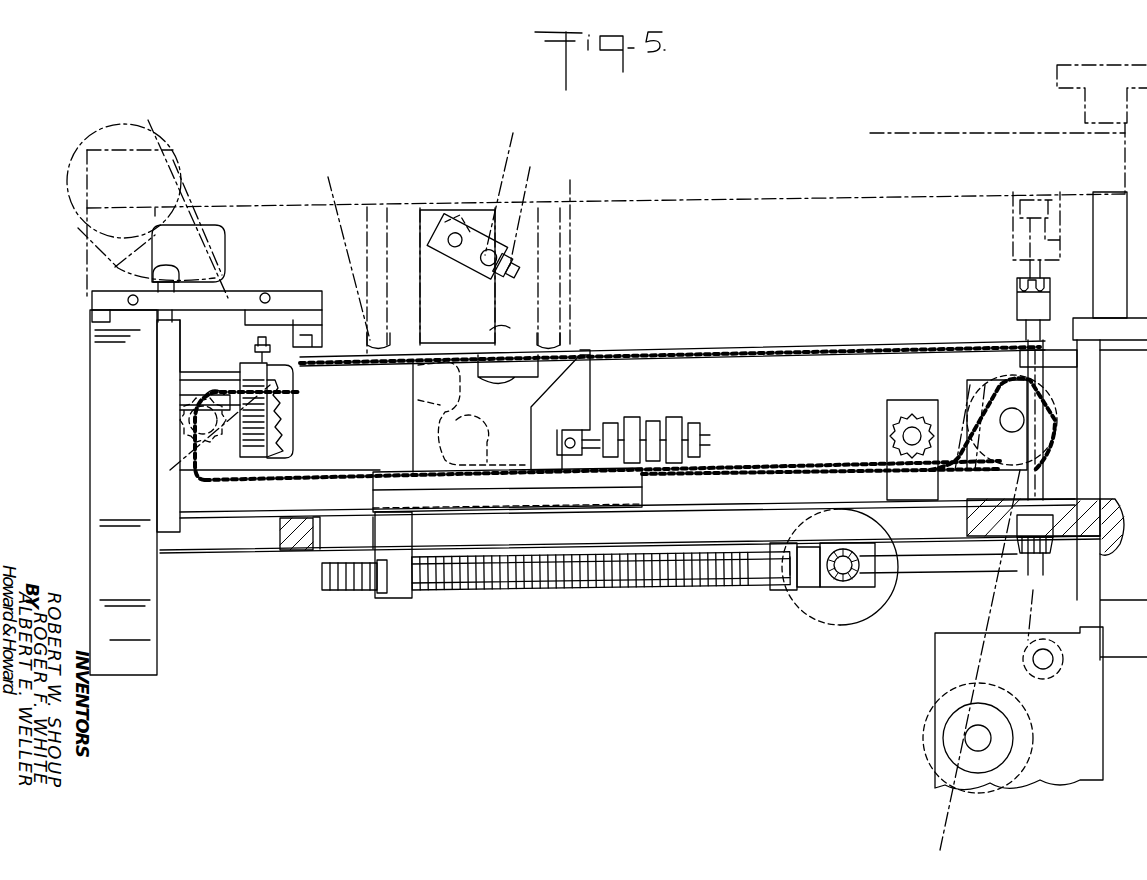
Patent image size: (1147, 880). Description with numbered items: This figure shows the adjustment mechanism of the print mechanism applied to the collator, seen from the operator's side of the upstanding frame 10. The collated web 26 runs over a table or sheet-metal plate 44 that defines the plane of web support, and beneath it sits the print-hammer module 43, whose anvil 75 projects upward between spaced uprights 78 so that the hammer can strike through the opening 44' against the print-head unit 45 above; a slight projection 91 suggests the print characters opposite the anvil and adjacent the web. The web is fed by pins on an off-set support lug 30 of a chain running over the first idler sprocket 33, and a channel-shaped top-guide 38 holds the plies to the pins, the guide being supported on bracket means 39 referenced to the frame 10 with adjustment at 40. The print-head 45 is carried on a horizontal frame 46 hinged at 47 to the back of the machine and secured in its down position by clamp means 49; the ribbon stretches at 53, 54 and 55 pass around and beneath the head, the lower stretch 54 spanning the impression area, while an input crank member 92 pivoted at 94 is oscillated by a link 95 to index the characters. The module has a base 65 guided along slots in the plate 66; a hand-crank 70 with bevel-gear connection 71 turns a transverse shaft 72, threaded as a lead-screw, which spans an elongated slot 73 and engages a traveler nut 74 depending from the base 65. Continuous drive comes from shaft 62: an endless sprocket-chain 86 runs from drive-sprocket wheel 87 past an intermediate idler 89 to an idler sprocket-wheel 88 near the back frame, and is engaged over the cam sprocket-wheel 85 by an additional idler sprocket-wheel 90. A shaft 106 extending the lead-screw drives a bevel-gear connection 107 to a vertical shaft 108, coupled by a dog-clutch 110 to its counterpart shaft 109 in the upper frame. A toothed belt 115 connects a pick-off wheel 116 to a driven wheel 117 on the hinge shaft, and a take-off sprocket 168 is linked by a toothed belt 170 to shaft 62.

The frame 10 is at (82, 400).
The collated web 26 is at (586, 352).
The off-set support lug 30 is at (287, 352).
The first idler sprocket 33 is at (226, 458).
The top-guide 38 is at (318, 334).
The bracket means 39 is at (245, 292).
The adjustment provision 40 is at (168, 265).
The print-hammer module 43 is at (600, 408).
The table or sheet-metal plate 44 is at (672, 342).
The opening 44' is at (509, 375).
The print-head unit 45 is at (500, 322).
The horizontal frame 46 is at (838, 198).
The hinge 47 is at (108, 182).
The clamp means 49 is at (1120, 65).
The ribbon stretch 53 is at (572, 238).
The lower ribbon stretch 54 is at (412, 345).
The ribbon stretch 55 is at (340, 238).
The drive shaft 62 is at (1012, 410).
The base 65 is at (645, 500).
The table or plate 66 is at (305, 547).
The hand-crank 70 is at (838, 625).
The bevel-gear connection 71 is at (866, 589).
The transverse shaft 72 is at (474, 586).
The elongated slot 73 is at (602, 576).
The traveler nut 74 is at (410, 592).
The anvil 75 is at (471, 413).
The uprights 78 is at (418, 432).
The cam sprocket-wheel 85 is at (412, 418).
The sprocket-chain 86 is at (785, 458).
The drive-sprocket wheel 87 is at (962, 440).
The idler sprocket-wheel 88 is at (292, 420).
The intermediate idler 89 is at (890, 428).
The additional idler sprocket-wheel 90 is at (487, 430).
The projection 91 is at (464, 345).
The input crank member 92 is at (445, 222).
The pivot 94 is at (430, 250).
The link 95 is at (510, 156).
The shaft 106 is at (916, 590).
The bevel-gear connection 107 is at (1039, 561).
The vertical shaft 108 is at (1026, 477).
The shaft 109 is at (1012, 222).
The dog-clutch 110 is at (1017, 286).
The toothed belt or sprocket-chain connection 115 is at (160, 355).
The pick-off wheel 116 is at (205, 400).
The driven wheel 117 is at (160, 110).
The take-off toothed wheel or sprocket 168 is at (935, 735).
The toothed belt 170 is at (938, 618).